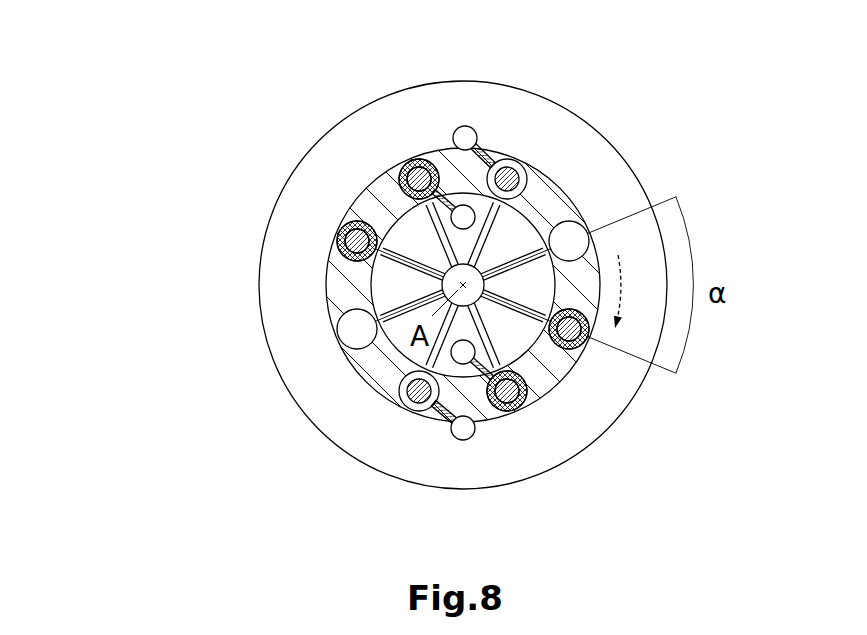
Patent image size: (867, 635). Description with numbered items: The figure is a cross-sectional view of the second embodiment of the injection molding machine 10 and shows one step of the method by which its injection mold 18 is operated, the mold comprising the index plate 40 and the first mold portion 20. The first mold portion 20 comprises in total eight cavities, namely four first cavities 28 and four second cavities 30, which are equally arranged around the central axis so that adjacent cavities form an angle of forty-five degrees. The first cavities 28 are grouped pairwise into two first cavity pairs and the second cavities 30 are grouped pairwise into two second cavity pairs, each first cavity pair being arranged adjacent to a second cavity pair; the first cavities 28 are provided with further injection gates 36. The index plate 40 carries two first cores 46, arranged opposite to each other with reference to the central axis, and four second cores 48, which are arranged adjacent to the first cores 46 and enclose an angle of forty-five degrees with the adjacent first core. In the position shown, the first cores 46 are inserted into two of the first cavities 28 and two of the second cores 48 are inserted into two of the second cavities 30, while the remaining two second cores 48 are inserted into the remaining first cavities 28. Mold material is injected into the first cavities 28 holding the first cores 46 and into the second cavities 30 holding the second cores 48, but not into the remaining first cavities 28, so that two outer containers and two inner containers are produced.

The injection molding machine 10 is at (92, 54).
The injection mold 18 is at (463, 275).
The first mold portion 20 is at (463, 285).
The first cavities 28 is at (467, 283).
The second cavities 30 is at (451, 296).
The further injection gates 36 is at (447, 196).
The index plate 40 is at (377, 203).
The first cores 46 is at (473, 266).
The second cores 48 is at (494, 269).